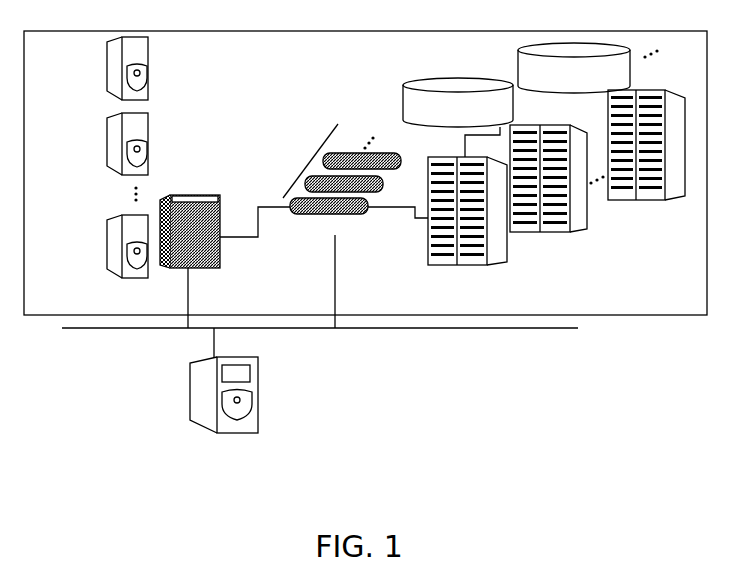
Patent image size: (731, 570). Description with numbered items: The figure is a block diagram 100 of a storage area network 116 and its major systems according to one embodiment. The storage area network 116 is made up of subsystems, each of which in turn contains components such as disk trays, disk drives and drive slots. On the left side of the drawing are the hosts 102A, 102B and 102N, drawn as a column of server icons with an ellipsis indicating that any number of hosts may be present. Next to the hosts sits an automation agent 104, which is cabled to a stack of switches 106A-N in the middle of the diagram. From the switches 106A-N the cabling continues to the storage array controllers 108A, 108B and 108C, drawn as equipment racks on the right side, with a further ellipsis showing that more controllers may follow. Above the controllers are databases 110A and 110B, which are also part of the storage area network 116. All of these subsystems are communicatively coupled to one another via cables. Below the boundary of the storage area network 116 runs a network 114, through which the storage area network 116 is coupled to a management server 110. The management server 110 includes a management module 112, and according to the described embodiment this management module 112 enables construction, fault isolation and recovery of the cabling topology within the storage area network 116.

The block diagram 100 is at (503, 453).
The host 102A is at (107, 61).
The host 102B is at (107, 134).
The host 102N is at (108, 236).
The automation agent 104 is at (220, 262).
The switches 106A-N is at (307, 157).
The storage array controller 108A is at (432, 281).
The storage array controller 108B is at (515, 234).
The storage array controller 108C is at (610, 200).
The management server 110 is at (229, 431).
The database 110A is at (458, 117).
The database 110B is at (574, 68).
The management module 112 is at (247, 373).
The network 114 is at (440, 328).
The storage area network 116 is at (338, 32).